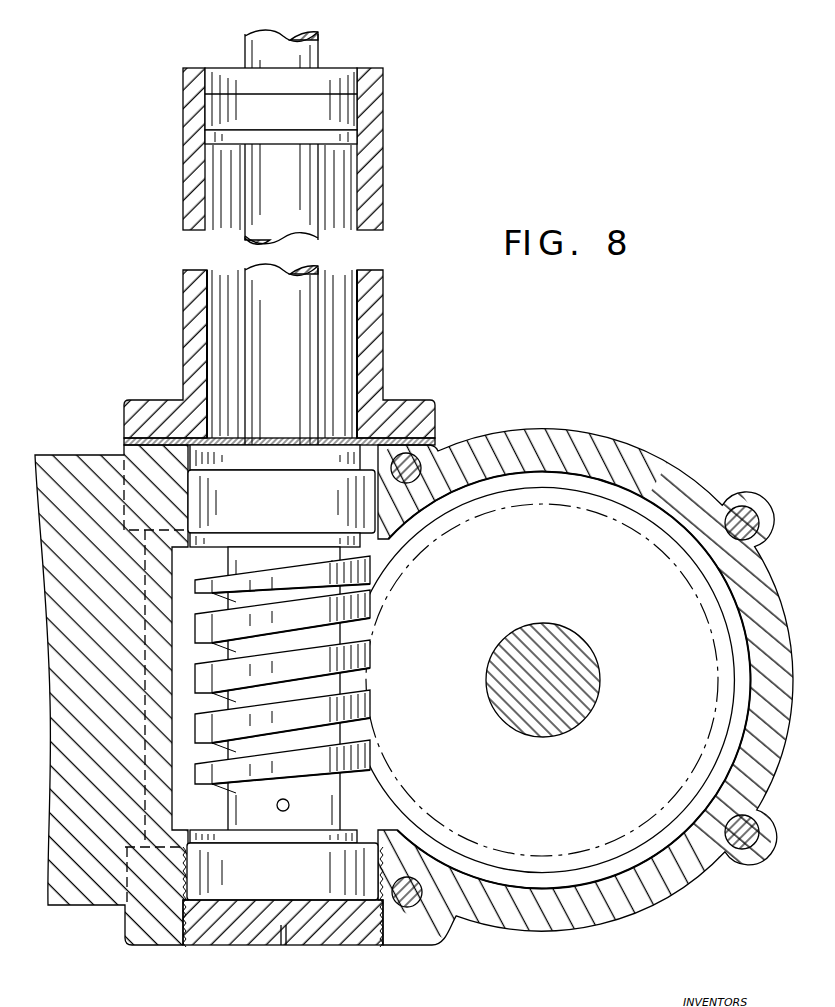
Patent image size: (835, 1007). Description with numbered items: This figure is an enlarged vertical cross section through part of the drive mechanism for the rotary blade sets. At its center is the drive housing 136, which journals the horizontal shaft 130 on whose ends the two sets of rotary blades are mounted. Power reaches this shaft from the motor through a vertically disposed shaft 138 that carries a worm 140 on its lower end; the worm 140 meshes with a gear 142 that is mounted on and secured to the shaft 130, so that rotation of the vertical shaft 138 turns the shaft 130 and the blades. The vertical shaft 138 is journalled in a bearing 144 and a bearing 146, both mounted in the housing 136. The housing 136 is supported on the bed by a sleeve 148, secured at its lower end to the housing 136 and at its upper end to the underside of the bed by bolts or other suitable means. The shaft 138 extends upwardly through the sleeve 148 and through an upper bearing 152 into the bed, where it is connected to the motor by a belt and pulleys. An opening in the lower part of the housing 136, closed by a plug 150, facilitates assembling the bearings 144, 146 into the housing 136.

The shaft 130 is at (533, 718).
The drive housing 136 is at (500, 922).
The vertically disposed shaft 138 is at (298, 313).
The worm 140 is at (343, 588).
The gear 142 is at (640, 520).
The bearing 144 is at (290, 511).
The bearing 146 is at (290, 886).
The sleeve 148 is at (186, 321).
The plug 150 is at (345, 943).
The upper bearing 152 is at (356, 104).